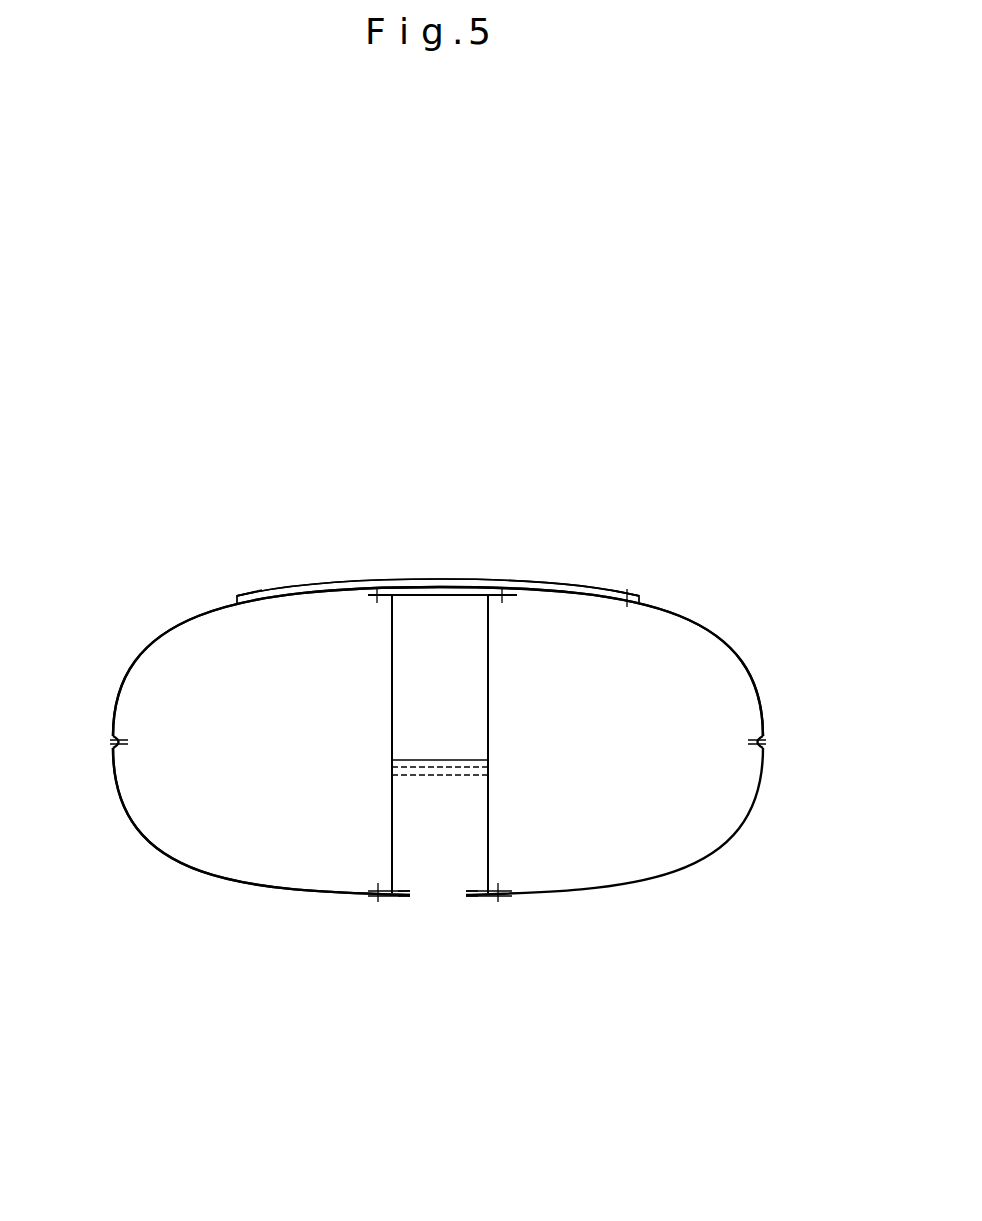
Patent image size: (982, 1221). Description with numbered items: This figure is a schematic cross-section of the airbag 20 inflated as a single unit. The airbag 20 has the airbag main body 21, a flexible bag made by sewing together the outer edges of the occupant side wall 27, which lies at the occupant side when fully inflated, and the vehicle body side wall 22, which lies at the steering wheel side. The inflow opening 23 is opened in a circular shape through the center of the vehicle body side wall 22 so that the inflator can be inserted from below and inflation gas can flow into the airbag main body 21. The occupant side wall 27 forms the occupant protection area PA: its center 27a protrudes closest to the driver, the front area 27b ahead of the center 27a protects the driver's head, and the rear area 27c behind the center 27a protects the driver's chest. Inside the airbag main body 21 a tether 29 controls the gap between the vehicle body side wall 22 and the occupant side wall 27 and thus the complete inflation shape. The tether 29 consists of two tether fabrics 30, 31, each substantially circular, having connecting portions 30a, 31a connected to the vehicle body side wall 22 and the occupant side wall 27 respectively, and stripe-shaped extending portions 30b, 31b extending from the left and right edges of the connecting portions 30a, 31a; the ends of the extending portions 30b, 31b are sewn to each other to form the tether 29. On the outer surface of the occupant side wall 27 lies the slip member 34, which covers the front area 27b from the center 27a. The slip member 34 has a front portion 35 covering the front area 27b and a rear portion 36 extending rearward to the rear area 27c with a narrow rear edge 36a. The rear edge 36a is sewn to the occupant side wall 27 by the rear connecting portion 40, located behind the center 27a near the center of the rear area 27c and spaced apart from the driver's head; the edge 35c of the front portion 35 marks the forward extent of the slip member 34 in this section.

The airbag 20 is at (670, 425).
The airbag main body 21 is at (722, 627).
The vehicle body side wall 22 is at (220, 878).
The inflow opening 23 is at (438, 900).
The occupant side wall 27 is at (155, 643).
The center portion 27a is at (440, 587).
The front area 27b is at (192, 620).
The rear area 27c is at (692, 627).
The tether 29 is at (268, 733).
The tether fabric 30 is at (387, 823).
The connecting portion 30a is at (492, 885).
The extending portion 30b is at (467, 803).
The tether fabric 31 is at (387, 723).
The connecting portion 31a is at (462, 597).
The extending portion 31b is at (467, 702).
The slip member 34 is at (327, 560).
The front portion 35 is at (300, 588).
The end of first sheet portion 35c is at (236, 593).
The rear portion 36 is at (542, 583).
The rear edge 36a is at (640, 595).
The rear connecting portion 40 is at (628, 596).